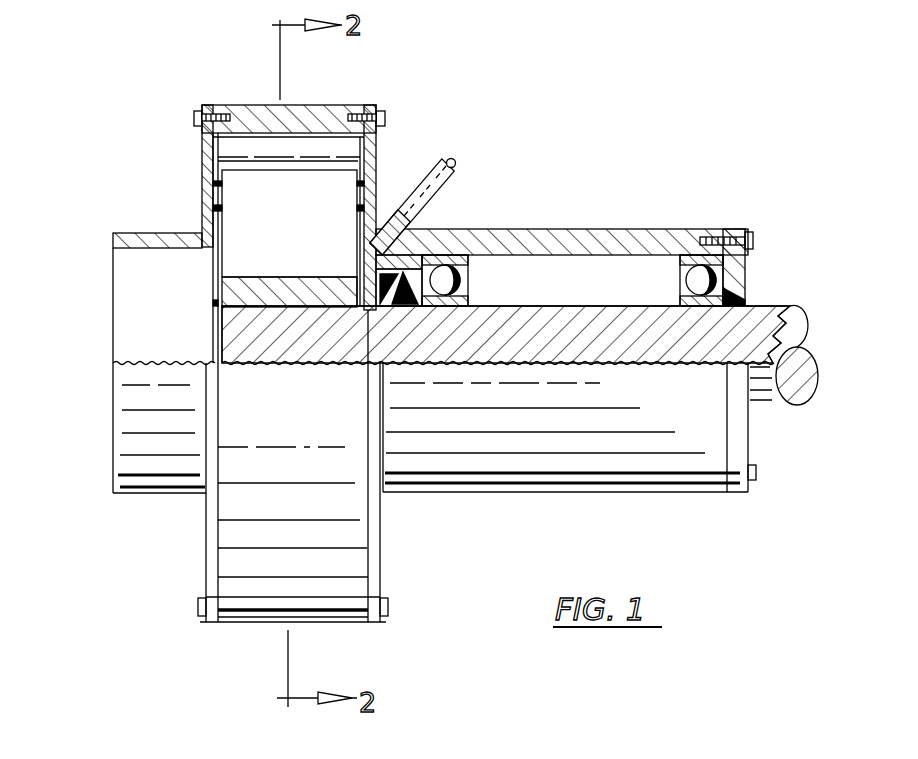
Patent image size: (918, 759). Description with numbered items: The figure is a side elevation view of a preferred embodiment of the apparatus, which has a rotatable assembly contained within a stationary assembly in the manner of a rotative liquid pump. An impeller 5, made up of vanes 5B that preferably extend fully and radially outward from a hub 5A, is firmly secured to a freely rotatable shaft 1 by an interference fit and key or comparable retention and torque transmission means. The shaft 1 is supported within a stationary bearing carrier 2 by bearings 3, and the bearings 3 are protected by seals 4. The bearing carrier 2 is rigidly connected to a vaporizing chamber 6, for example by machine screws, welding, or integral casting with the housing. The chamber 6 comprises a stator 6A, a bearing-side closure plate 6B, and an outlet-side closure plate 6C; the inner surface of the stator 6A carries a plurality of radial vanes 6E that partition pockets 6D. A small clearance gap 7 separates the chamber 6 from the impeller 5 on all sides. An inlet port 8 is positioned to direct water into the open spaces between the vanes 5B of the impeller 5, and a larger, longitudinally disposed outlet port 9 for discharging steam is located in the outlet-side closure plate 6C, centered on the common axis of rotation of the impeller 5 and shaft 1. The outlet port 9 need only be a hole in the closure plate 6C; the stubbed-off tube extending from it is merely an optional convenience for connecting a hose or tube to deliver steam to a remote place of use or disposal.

The shaft 1 is at (802, 303).
The bearing carrier 2 is at (663, 229).
The bearings 3 is at (470, 231).
The seals 4 is at (428, 231).
The impeller 5 is at (304, 162).
The hub 5A is at (310, 277).
The vanes 5B is at (213, 193).
The vaporizing chamber 6 is at (218, 626).
The stator 6A is at (256, 622).
The bearing-side closure plate 6B is at (384, 563).
The outlet-side closure plate 6C is at (205, 537).
The pockets 6D is at (255, 128).
The radial vanes 6E is at (287, 160).
The clearance gap 7 is at (233, 157).
The inlet port 8 is at (447, 160).
The outlet port 9 is at (113, 292).